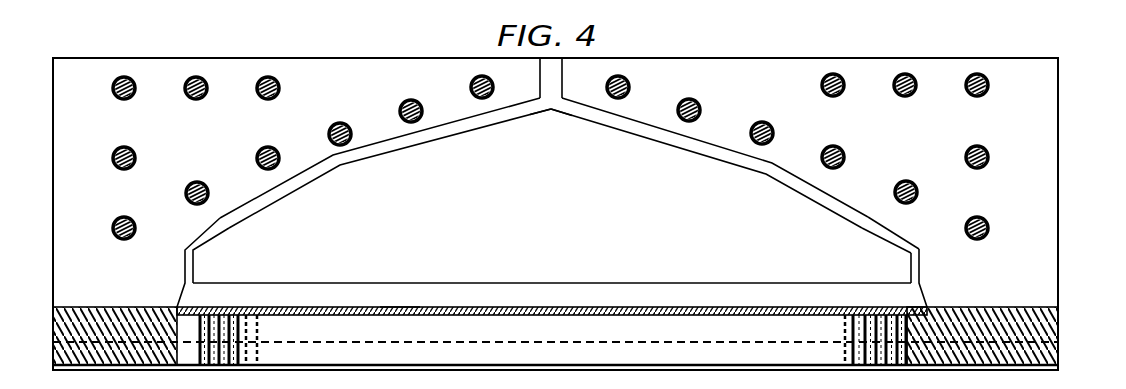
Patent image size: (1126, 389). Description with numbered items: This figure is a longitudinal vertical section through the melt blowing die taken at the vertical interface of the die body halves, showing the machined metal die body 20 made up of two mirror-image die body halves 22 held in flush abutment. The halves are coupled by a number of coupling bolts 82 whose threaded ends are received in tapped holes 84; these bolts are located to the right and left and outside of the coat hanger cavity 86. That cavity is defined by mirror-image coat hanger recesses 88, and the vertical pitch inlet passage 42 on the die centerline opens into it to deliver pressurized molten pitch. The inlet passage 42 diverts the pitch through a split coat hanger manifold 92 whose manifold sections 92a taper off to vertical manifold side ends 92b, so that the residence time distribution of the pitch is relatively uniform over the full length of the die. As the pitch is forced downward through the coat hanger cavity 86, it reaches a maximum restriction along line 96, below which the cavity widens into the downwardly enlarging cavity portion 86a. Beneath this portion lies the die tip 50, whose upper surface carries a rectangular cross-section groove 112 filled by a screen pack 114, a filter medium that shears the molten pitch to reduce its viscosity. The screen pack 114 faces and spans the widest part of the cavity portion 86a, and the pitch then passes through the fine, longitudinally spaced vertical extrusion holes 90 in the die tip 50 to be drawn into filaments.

The die body 20 is at (1062, 138).
The die body halves 22 is at (1060, 196).
The pitch inlet passage 42 is at (549, 72).
The die tip 50 is at (104, 302).
The coupling bolts 82 is at (907, 97).
The tapped holes 84 is at (833, 97).
The coat hanger cavity 86 is at (576, 202).
The downwardly enlarging cavity portion 86a is at (552, 273).
The coat hanger recesses 88 is at (808, 210).
The extrusion holes 90 is at (242, 313).
The split coat hanger manifold 92 is at (561, 112).
The manifold sections 92a is at (457, 135).
The vertical manifold side ends 92b is at (193, 268).
The line of maximum restriction 96 is at (515, 283).
The rectangular cross-section groove 112 is at (290, 315).
The screen pack 114 is at (398, 307).